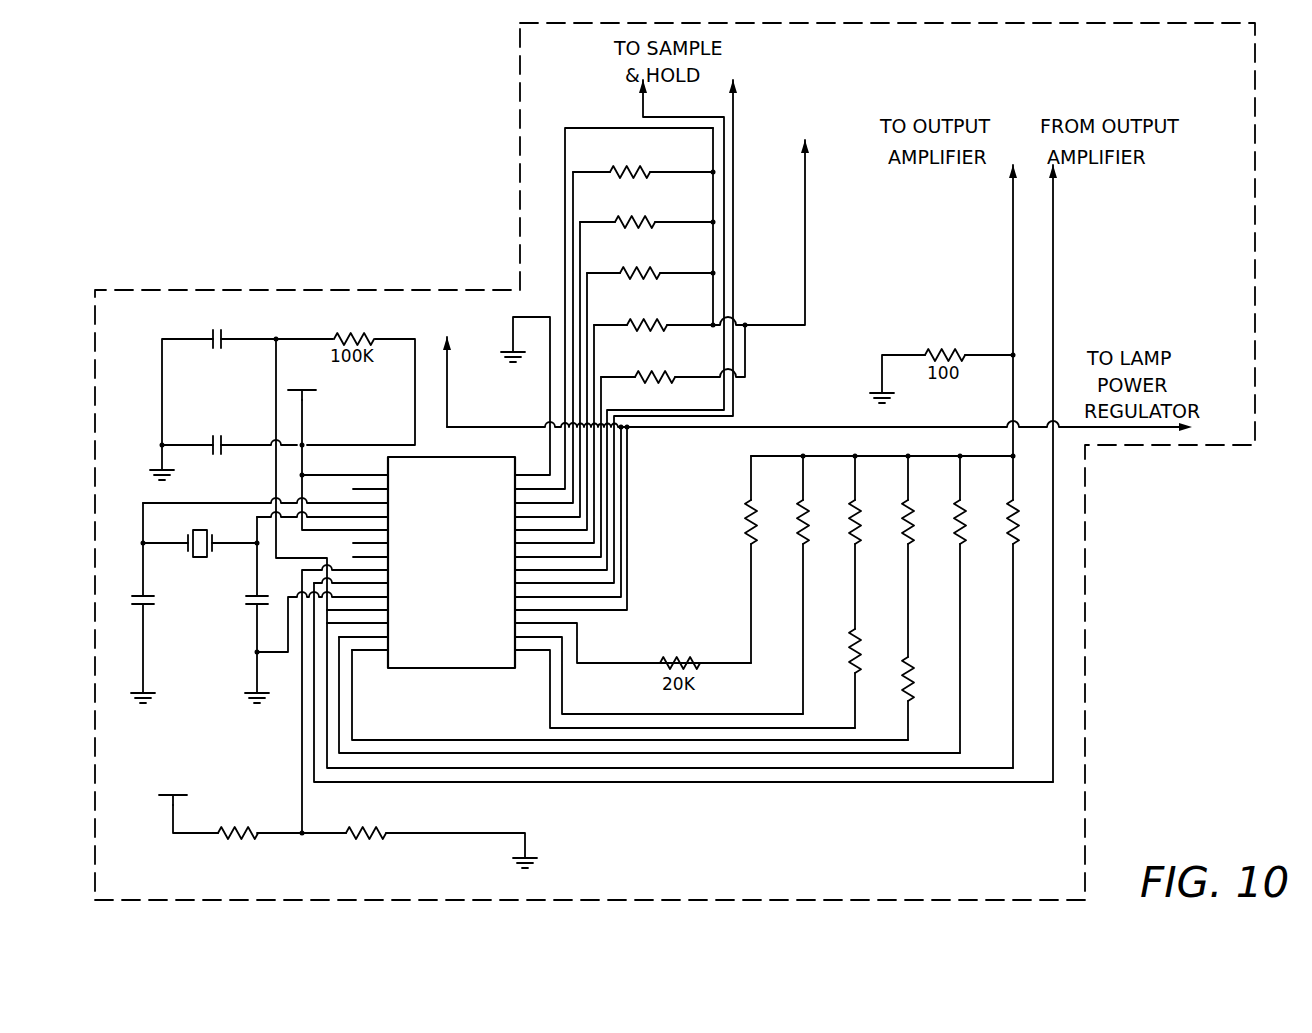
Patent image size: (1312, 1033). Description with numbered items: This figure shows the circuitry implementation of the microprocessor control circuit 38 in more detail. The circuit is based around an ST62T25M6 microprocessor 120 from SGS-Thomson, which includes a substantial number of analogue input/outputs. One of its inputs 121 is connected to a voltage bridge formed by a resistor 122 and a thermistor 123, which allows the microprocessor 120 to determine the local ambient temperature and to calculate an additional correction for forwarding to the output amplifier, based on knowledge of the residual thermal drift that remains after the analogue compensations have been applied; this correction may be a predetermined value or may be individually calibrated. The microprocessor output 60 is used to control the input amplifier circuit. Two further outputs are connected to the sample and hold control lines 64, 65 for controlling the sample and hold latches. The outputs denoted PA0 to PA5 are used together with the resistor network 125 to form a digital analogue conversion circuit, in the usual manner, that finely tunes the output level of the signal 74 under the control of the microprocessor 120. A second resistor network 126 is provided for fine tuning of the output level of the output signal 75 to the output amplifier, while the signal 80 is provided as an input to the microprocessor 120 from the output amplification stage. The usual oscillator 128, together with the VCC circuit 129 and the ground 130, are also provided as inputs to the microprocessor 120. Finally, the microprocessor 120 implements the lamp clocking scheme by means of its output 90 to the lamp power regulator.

The microprocessor control circuit 38 is at (338, 153).
The microprocessor output 60 is at (450, 398).
The sample and hold control line 64 is at (641, 101).
The sample and hold control line 65 is at (735, 108).
The signal 74 is at (808, 258).
The output signal 75 is at (1010, 213).
The signal 80 is at (1057, 231).
The output 90 is at (770, 420).
The microprocessor 120 is at (418, 668).
The input 121 is at (300, 740).
The resistor 122 is at (216, 840).
The thermistor 123 is at (395, 828).
The resistor network 125 is at (554, 240).
The second resistor network 126 is at (732, 577).
The oscillator 128 is at (203, 560).
The VCC circuit 129 is at (302, 418).
The ground 130 is at (511, 330).